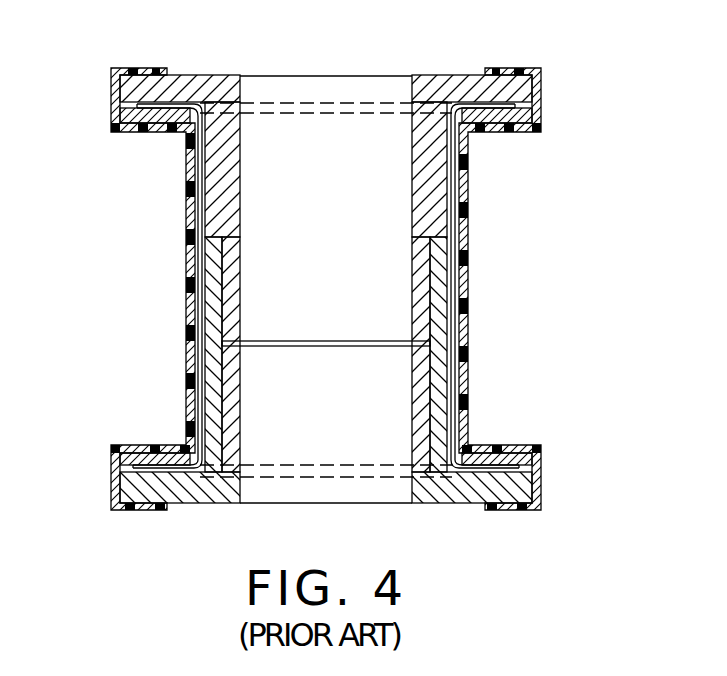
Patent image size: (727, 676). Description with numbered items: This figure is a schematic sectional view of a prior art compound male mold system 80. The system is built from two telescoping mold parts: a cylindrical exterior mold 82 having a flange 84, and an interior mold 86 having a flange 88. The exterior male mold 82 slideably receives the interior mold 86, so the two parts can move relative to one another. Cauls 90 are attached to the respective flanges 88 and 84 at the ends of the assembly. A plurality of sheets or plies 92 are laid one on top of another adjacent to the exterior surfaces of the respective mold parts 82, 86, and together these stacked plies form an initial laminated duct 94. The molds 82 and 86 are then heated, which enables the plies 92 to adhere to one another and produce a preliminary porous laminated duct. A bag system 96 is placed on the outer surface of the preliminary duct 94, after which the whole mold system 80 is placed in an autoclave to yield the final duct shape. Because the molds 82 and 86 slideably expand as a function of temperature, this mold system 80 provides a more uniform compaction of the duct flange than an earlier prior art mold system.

The compound male mold system 80 is at (432, 53).
The cylindrical exterior mold 82 is at (420, 412).
The flange 84 is at (190, 500).
The interior mold 86 is at (420, 146).
The flange 88 is at (190, 78).
The cauls 90 is at (150, 122).
The sheets or plies 92 is at (197, 198).
The initial laminated duct 94 is at (224, 150).
The bag system 96 is at (485, 288).